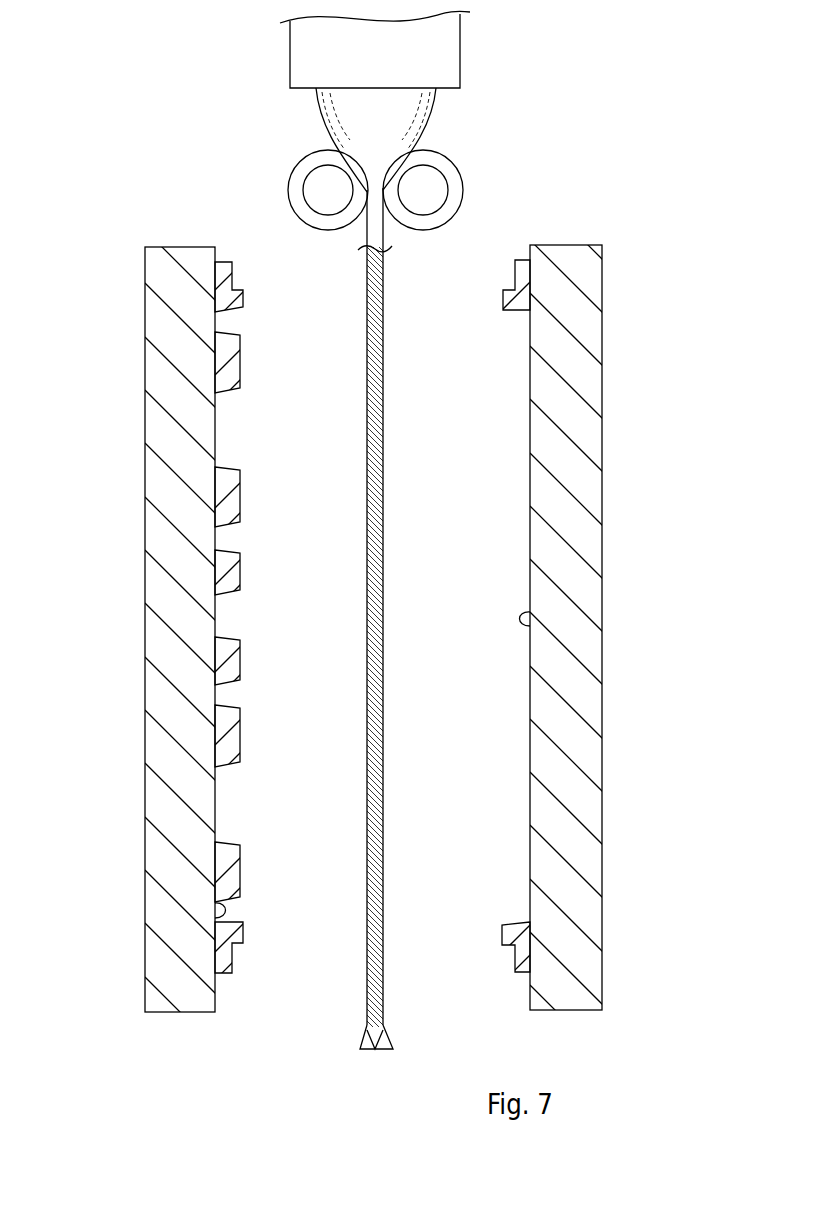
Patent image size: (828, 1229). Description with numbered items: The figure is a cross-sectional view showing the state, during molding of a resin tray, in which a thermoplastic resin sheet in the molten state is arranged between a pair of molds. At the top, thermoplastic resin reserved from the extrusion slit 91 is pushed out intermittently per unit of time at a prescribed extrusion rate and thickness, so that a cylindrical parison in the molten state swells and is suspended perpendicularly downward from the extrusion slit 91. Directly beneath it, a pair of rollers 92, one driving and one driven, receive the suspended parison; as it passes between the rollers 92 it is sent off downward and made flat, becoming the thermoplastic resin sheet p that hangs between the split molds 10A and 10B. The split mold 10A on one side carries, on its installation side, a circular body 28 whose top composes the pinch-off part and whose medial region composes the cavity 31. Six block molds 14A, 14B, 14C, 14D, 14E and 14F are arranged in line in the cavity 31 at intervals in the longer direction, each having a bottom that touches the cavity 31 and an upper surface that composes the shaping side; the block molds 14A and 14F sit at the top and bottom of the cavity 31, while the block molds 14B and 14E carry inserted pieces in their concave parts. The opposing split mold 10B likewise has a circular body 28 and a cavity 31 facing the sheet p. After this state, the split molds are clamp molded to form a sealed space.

The extrusion slit 91 is at (460, 42).
The sheet (paper web) p is at (430, 113).
The roller 92 is at (288, 190).
The split mold 10A is at (152, 430).
The split mold 10B is at (594, 384).
The block mold 14A is at (239, 360).
The block mold 14B is at (239, 496).
The block mold 14C is at (239, 575).
The block mold 14D is at (239, 663).
The block mold 14E is at (239, 741).
The block mold 14F is at (239, 869).
The circular body 28 is at (516, 271).
The cavity 31 is at (222, 903).